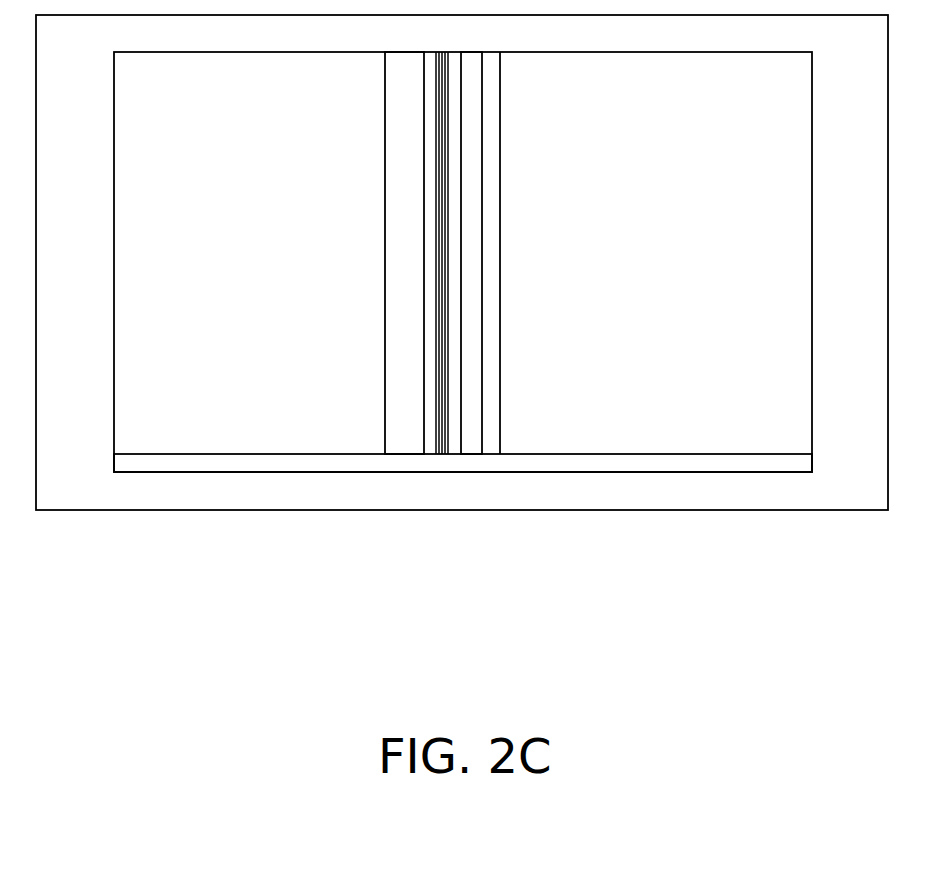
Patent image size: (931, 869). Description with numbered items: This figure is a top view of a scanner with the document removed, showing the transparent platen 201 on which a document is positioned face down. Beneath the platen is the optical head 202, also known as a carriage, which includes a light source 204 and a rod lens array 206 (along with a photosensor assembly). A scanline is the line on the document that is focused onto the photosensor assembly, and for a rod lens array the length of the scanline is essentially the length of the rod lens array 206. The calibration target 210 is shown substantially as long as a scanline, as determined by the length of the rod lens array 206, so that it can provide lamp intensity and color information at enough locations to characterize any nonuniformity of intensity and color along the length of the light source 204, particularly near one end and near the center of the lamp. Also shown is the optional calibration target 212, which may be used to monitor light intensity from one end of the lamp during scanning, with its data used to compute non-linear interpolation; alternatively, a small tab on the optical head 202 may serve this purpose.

The transparent platen 201 is at (587, 52).
The optical head 202 is at (500, 258).
The light source 204 is at (469, 52).
The rod lens array 206 is at (440, 52).
The calibration target 210 is at (385, 258).
The optional calibration target 212 is at (468, 475).